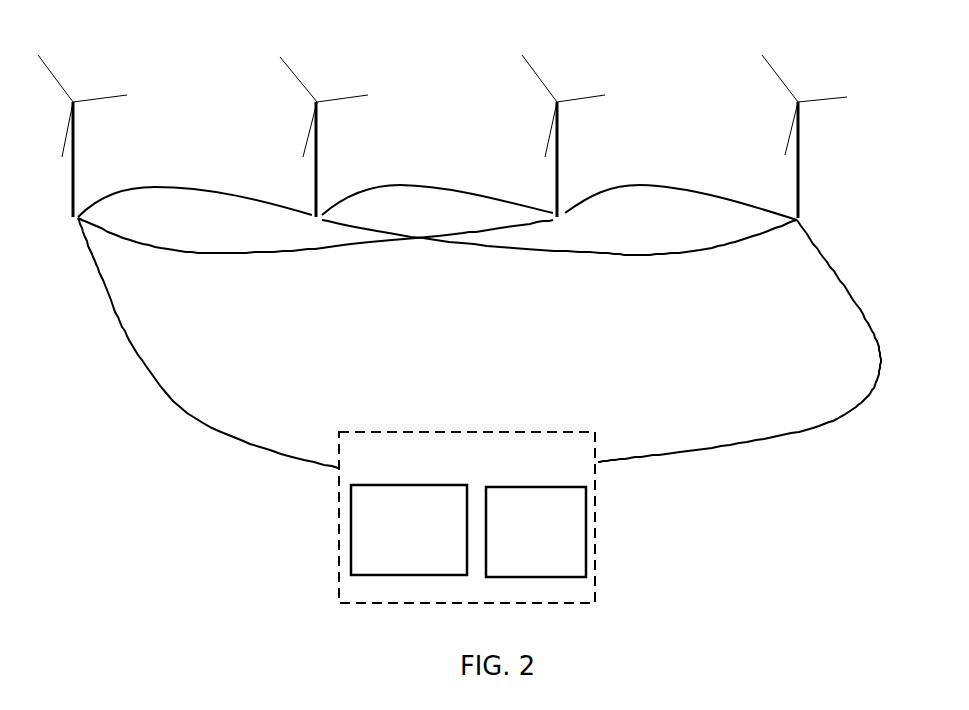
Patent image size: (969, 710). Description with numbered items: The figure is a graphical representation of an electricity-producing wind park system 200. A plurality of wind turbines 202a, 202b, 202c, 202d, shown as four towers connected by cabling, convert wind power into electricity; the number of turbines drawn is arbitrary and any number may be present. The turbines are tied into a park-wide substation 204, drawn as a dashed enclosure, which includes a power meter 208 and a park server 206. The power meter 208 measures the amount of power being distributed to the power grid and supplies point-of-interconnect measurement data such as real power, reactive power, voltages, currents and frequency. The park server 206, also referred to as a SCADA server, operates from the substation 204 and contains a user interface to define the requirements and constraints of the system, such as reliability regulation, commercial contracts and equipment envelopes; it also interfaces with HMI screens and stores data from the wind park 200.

The electricity-producing wind park system 200 is at (850, 62).
The wind turbine 202a is at (75, 165).
The wind turbine 202b is at (318, 157).
The wind turbine 202c is at (559, 150).
The wind turbine 202d is at (800, 152).
The park-wide substation 204 is at (577, 580).
The park server 206 is at (355, 548).
The power meter 208 is at (575, 505).